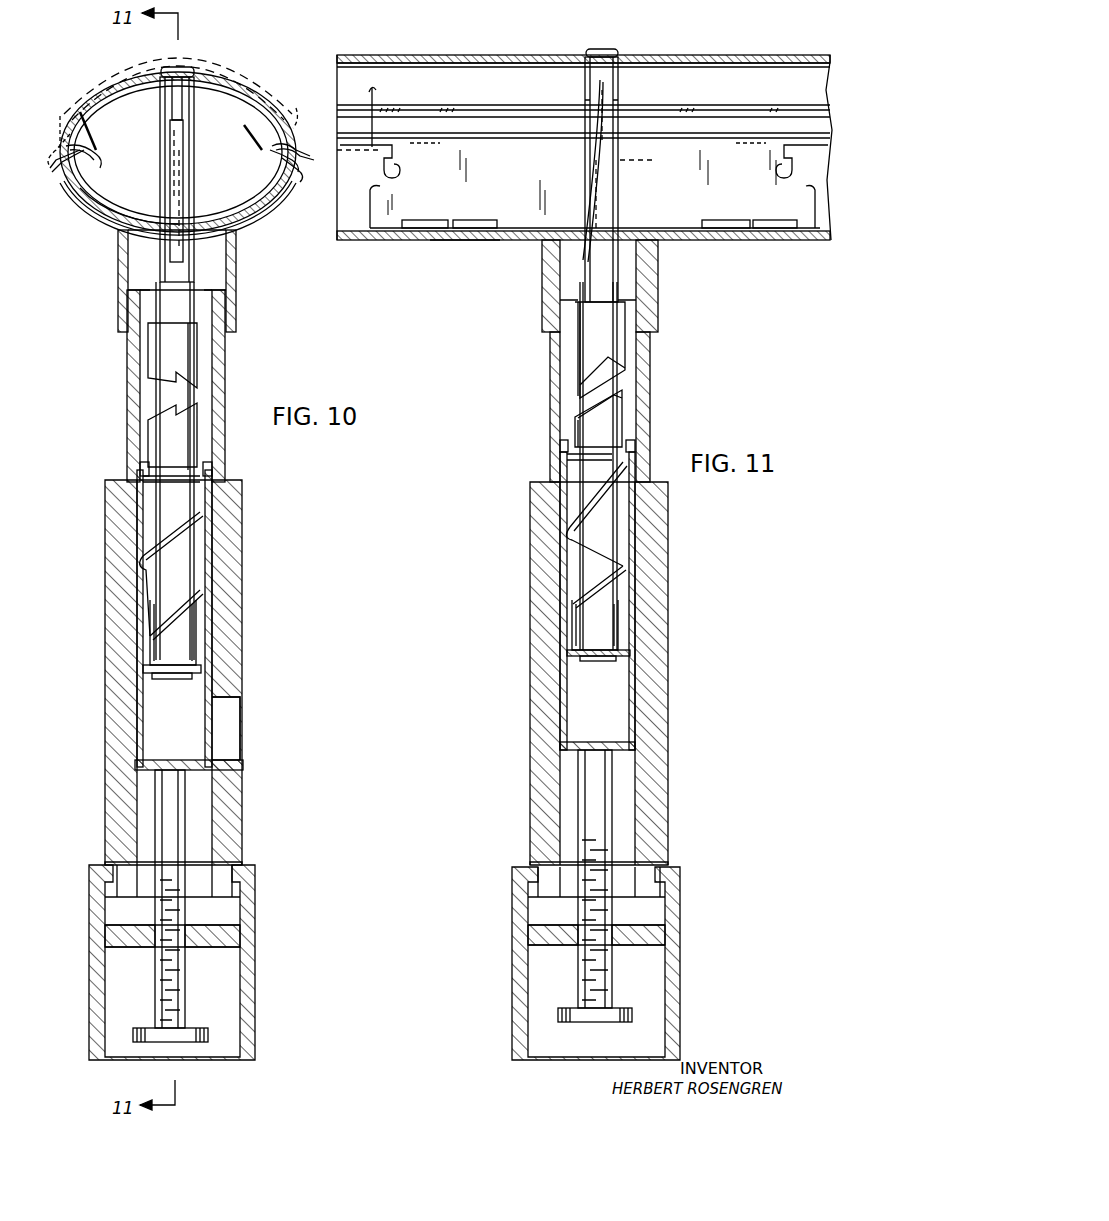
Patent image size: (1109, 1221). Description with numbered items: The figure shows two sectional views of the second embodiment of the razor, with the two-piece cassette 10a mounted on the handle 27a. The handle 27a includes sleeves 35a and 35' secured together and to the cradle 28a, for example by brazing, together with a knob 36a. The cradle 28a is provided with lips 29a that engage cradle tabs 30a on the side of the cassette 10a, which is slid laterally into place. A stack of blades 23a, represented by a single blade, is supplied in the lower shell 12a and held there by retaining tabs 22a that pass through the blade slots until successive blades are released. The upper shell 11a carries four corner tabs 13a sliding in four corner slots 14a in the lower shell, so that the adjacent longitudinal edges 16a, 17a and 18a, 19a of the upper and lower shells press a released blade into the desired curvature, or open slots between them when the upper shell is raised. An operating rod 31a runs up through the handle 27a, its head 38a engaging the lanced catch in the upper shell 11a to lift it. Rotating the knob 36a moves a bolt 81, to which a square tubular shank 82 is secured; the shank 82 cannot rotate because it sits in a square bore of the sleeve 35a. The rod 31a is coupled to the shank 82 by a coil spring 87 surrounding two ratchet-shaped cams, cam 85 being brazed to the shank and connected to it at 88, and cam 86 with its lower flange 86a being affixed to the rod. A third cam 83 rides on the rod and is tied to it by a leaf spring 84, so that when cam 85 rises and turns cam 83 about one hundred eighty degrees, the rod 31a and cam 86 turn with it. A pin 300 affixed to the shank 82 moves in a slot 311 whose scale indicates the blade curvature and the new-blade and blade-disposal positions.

In FIG. 10, the cassette 10a is at (300, 110).
In FIG. 11, the cassette 10a is at (348, 54).
In FIG. 10, the upper shell 11a is at (258, 82).
In FIG. 11, the upper shell 11a is at (428, 56).
In FIG. 10, the lower shell 12a is at (286, 208).
In FIG. 11, the lower shell 12a is at (332, 240).
In FIG. 10, the corner tabs 13a is at (88, 138).
In FIG. 11, the corner tabs 13a is at (370, 136).
In FIG. 11, the corner slots 14a is at (390, 158).
In FIG. 10, the longitudinal edge 16a is at (298, 140).
In FIG. 10, the longitudinal edge 17a is at (266, 152).
In FIG. 10, the longitudinal edge 18a is at (64, 116).
In FIG. 11, the longitudinal edge 18a is at (530, 114).
In FIG. 10, the longitudinal edge 19a is at (84, 138).
In FIG. 11, the longitudinal edge 19a is at (394, 130).
In FIG. 11, the retaining tabs 22a is at (424, 220).
In FIG. 10, the blade 23a is at (128, 212).
In FIG. 11, the blade 23a is at (376, 215).
In FIG. 10, the handle 27a is at (250, 528).
In FIG. 11, the handle 27a is at (522, 514).
In FIG. 10, the cradle 28a is at (236, 238).
In FIG. 11, the cradle 28a is at (436, 242).
In FIG. 10, the lips 29a is at (78, 190).
In FIG. 10, the cradle tabs 30a is at (92, 210).
In FIG. 10, the operating rod 31a is at (163, 104).
In FIG. 11, the operating rod 31a is at (620, 96).
In FIG. 10, the sleeve 35' is at (149, 281).
In FIG. 11, the sleeve 35' is at (622, 286).
In FIG. 10, the sleeve 35a is at (226, 394).
In FIG. 11, the sleeve 35a is at (652, 360).
In FIG. 10, the knob 36a is at (256, 906).
In FIG. 11, the knob 36a is at (680, 952).
In FIG. 10, the head 38a is at (184, 68).
In FIG. 11, the head 38a is at (606, 50).
In FIG. 10, the bolt 81 is at (186, 858).
In FIG. 11, the bolt 81 is at (612, 868).
In FIG. 10, the tubular shank 82 is at (212, 690).
In FIG. 11, the tubular shank 82 is at (636, 696).
In FIG. 10, the cam member 83 is at (186, 360).
In FIG. 11, the cam member 83 is at (585, 346).
In FIG. 10, the leaf spring 84 is at (184, 160).
In FIG. 11, the leaf spring 84 is at (588, 178).
In FIG. 10, the cam member 85 is at (186, 432).
In FIG. 11, the cam member 85 is at (620, 412).
In FIG. 10, the cam member 86 is at (196, 626).
In FIG. 11, the cam member 86 is at (578, 626).
In FIG. 10, the flange 86a is at (152, 676).
In FIG. 11, the flange 86a is at (566, 654).
In FIG. 10, the coil spring 87 is at (143, 556).
In FIG. 11, the coil spring 87 is at (624, 566).
In FIG. 10, the connection 88 is at (142, 462).
In FIG. 11, the connection 88 is at (568, 446).
In FIG. 10, the pin 300 is at (245, 768).
In FIG. 10, the slot 311 is at (232, 724).